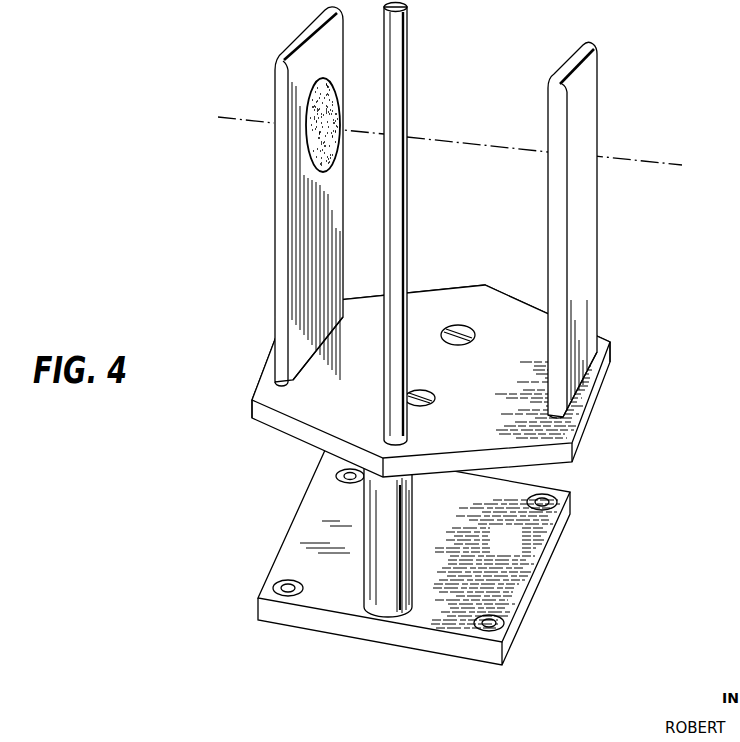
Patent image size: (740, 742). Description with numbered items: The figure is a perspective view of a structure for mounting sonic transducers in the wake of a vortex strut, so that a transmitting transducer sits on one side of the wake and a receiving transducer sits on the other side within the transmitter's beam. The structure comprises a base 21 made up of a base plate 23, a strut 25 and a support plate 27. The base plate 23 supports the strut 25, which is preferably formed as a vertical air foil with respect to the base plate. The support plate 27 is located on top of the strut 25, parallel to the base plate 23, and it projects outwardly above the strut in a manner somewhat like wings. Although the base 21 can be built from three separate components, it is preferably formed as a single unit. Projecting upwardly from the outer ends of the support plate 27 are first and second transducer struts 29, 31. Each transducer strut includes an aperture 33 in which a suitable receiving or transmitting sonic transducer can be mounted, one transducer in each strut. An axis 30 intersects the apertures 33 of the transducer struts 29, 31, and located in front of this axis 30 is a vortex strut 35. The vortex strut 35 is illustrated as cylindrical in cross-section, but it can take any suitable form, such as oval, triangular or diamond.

The base 21 is at (633, 331).
The base plate 23 is at (290, 556).
The strut 25 is at (440, 523).
The support plate 27 is at (437, 297).
The first transducer strut 29 is at (300, 196).
The axis 30 is at (621, 163).
The second transducer strut 31 is at (588, 123).
The aperture 33 is at (337, 103).
The vortex strut 35 is at (408, 57).